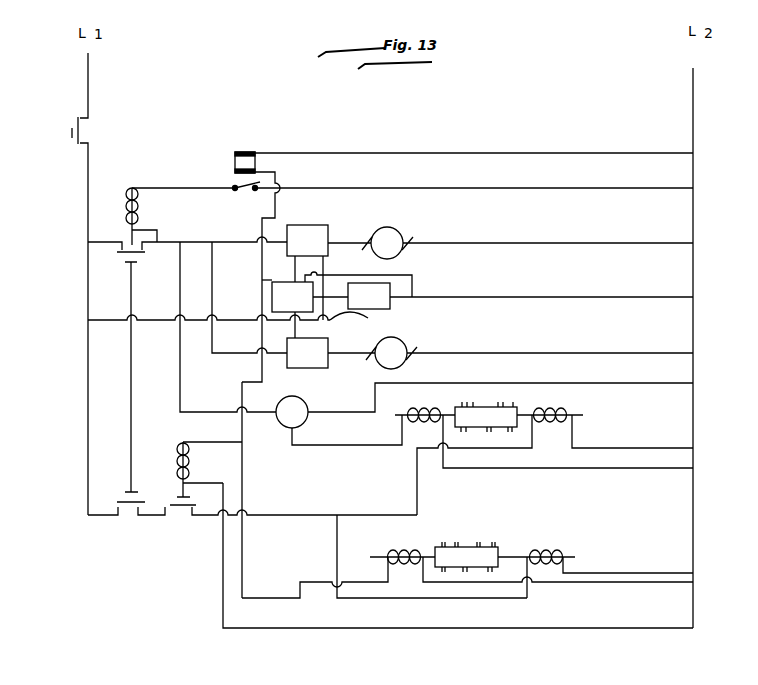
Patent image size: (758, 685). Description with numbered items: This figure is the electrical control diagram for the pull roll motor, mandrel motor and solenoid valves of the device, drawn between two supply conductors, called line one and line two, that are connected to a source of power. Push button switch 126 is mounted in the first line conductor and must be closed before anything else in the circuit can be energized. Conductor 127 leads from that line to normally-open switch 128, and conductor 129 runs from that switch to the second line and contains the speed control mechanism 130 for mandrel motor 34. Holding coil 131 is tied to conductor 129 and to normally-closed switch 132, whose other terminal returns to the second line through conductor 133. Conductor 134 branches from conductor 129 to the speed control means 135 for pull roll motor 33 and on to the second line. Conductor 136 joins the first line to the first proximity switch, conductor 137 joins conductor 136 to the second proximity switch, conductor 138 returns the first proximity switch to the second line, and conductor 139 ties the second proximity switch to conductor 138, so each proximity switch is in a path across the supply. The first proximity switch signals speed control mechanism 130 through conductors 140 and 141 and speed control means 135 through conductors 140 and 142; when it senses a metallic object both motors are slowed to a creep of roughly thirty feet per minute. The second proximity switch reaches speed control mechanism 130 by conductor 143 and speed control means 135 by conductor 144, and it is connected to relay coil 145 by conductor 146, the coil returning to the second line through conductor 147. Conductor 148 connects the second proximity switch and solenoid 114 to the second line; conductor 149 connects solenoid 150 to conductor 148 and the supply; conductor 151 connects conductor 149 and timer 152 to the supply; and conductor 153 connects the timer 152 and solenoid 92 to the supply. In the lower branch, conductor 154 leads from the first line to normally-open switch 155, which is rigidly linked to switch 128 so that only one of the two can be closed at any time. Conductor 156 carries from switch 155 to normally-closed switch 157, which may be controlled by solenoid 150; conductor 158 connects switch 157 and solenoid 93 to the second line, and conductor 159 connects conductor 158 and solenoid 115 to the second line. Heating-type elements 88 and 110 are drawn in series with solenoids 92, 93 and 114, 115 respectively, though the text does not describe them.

The push button switch 126 is at (72, 133).
The holding coil 131 is at (131, 187).
The normally-closed switch 132 is at (235, 185).
The relay coil 145 is at (247, 152).
The conductor 146 is at (272, 171).
The conductor 147 is at (418, 152).
The conductor 133 is at (412, 190).
The conductor 127 is at (103, 235).
The conductor 129 is at (174, 235).
The speed control mechanism 130 is at (310, 226).
The mandrel motor 34 is at (408, 236).
The normally-open switch 128 is at (136, 258).
The conductor 134 is at (213, 283).
The conductor 143 is at (273, 273).
The conductor 141 is at (326, 268).
The conductor 140 is at (333, 294).
The conductor 139 is at (414, 288).
The conductor 138 is at (502, 296).
The conductor 137 is at (263, 326).
The conductor 144 is at (278, 319).
The conductor 142 is at (363, 321).
The conductor 136 is at (107, 323).
The conductor 151 is at (180, 358).
The speed control means 135 is at (322, 341).
The pull roll motor 33 is at (406, 350).
The conductor 148 is at (260, 366).
The timer 152 is at (300, 398).
The conductor 153 is at (343, 445).
The solenoid 150 is at (177, 460).
The normally-closed switch 157 is at (178, 498).
The conductor 158 is at (417, 488).
The conductor 159 is at (337, 548).
The solenoid 114 is at (410, 550).
The heater element 110 is at (485, 548).
The solenoid 115 is at (545, 550).
The conductor 149 is at (268, 630).
The conductor 154 is at (90, 518).
The normally-open switch 155 is at (131, 503).
The conductor 156 is at (163, 517).
The solenoid 92 is at (415, 409).
The heater element 88 is at (512, 412).
The solenoid 93 is at (562, 410).